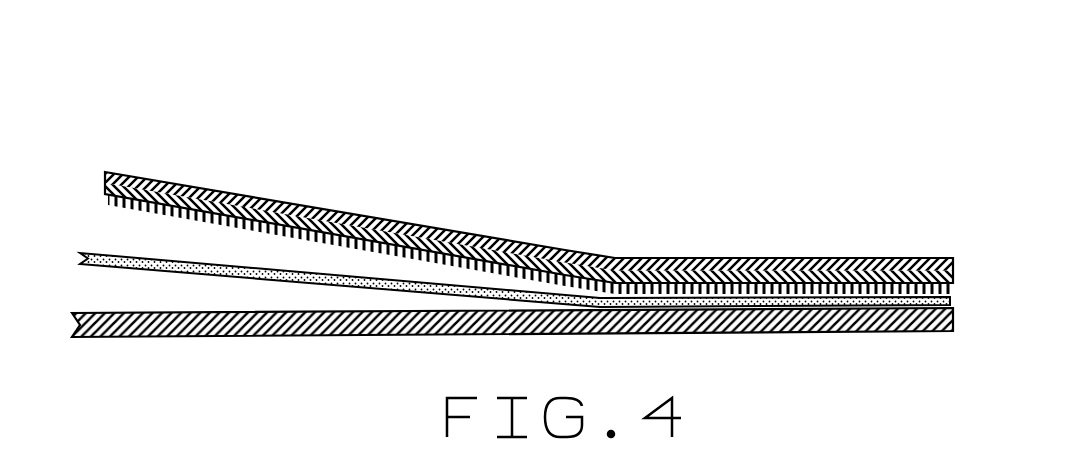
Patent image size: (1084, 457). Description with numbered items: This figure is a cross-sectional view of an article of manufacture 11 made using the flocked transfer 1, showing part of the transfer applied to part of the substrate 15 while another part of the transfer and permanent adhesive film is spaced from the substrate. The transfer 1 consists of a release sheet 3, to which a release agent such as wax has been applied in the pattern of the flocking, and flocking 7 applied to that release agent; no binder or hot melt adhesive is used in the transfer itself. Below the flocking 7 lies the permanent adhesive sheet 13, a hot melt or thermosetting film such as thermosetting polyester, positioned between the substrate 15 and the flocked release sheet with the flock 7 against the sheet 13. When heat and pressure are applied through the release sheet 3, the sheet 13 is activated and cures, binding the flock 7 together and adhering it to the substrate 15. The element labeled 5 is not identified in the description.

The flocked transfer 1 is at (502, 204).
The release sheet 3 is at (105, 172).
The inner layer 5 is at (104, 189).
The flocking 7 is at (141, 208).
The article of manufacture 11 is at (502, 250).
The permanent adhesive sheet 13 is at (123, 269).
The substrate 15 is at (290, 337).